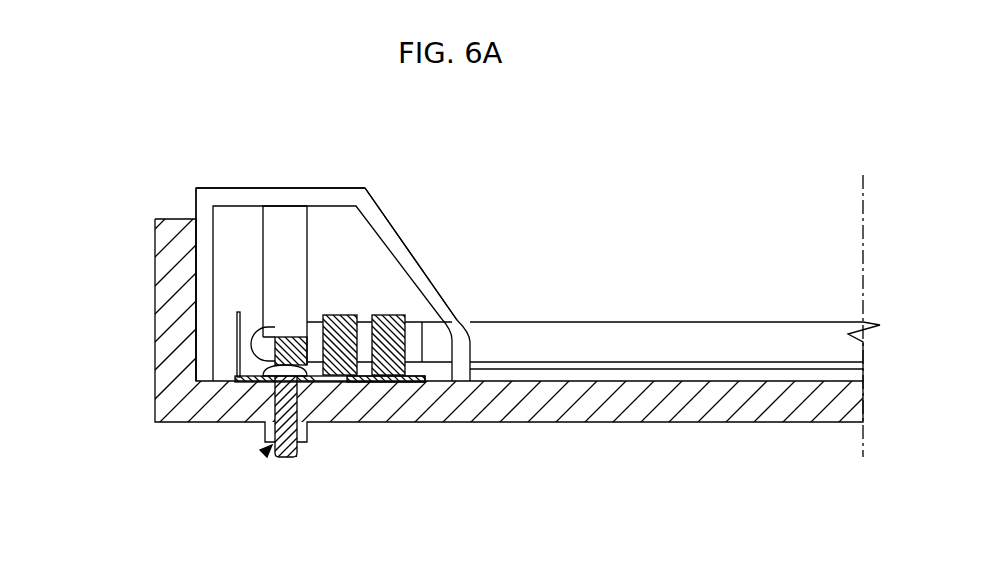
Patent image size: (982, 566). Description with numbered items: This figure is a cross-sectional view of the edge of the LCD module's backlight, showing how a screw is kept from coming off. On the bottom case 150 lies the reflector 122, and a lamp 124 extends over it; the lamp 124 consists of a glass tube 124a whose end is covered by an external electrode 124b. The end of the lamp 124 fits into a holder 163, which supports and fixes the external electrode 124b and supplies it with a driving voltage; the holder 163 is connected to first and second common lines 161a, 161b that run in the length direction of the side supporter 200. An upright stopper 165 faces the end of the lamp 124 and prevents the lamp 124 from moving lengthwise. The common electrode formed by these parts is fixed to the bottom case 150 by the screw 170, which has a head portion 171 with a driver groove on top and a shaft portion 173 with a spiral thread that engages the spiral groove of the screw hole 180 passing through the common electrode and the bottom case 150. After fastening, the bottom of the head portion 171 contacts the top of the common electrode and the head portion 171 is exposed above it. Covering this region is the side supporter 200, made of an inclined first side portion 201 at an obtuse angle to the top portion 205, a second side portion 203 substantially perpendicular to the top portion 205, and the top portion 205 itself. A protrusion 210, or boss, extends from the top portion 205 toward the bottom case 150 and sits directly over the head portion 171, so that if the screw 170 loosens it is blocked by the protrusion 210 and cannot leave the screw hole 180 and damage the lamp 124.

The reflector 122 is at (668, 375).
The lamp 124 is at (515, 292).
The glass tube 124a is at (546, 333).
The external electrode 124b is at (412, 332).
The bottom case 150 is at (155, 268).
The first common line 161a is at (243, 382).
The second common line 161b is at (392, 382).
The holder 163 is at (386, 314).
The stopper 165 is at (236, 338).
The screw 170 is at (301, 438).
The head portion 171 is at (311, 378).
The shaft portion 173 is at (295, 457).
The screw hole 180 is at (264, 453).
The side supporter 200 is at (269, 231).
The first side portion 201 is at (394, 236).
The second side portion 203 is at (205, 240).
The top portion 205 is at (204, 188).
The protrusion 210 is at (288, 218).